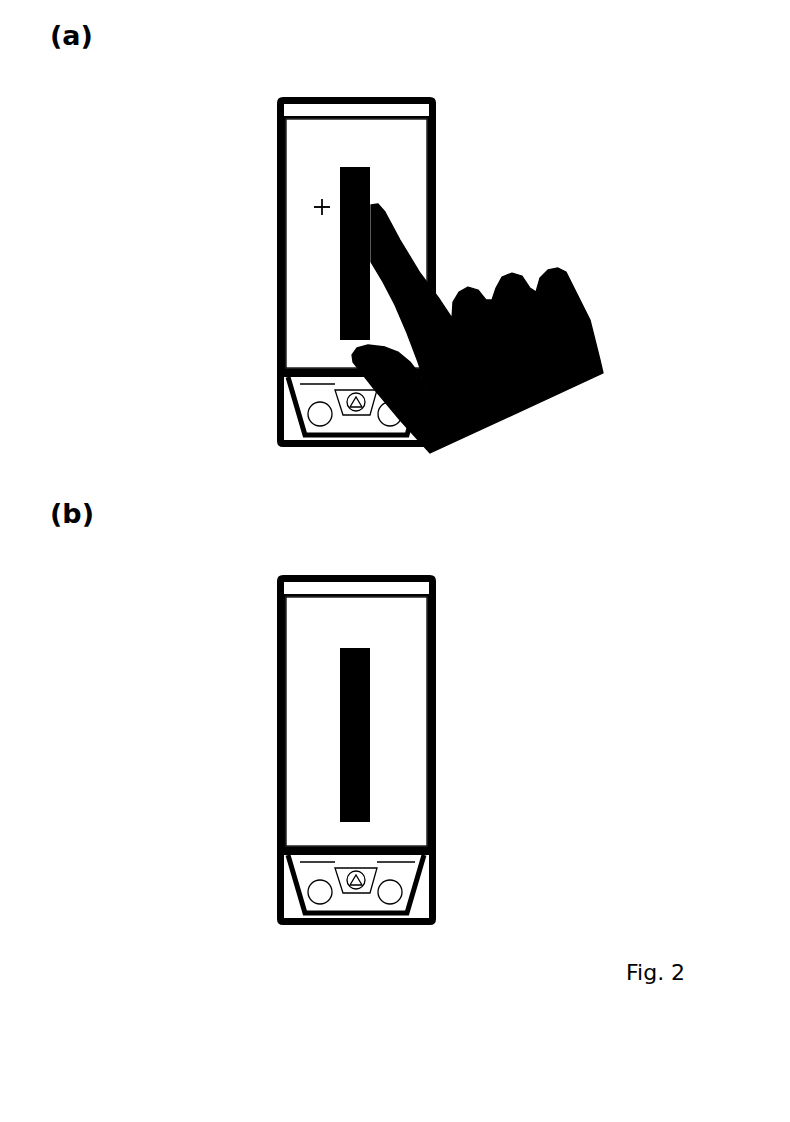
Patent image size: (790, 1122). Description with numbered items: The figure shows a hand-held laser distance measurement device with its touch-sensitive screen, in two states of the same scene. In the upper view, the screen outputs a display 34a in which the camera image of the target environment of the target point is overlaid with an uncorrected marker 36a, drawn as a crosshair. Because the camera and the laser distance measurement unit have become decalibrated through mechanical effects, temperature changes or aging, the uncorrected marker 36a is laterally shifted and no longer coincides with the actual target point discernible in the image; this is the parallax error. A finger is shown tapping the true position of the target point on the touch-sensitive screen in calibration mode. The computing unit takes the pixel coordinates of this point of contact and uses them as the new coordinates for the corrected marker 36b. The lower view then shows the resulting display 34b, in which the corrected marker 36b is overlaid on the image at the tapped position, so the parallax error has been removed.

The display before correction 34a is at (356, 243).
The display after correction 34b is at (356, 721).
The uncorrected marker 36a is at (322, 207).
The corrected marker 36b is at (355, 651).